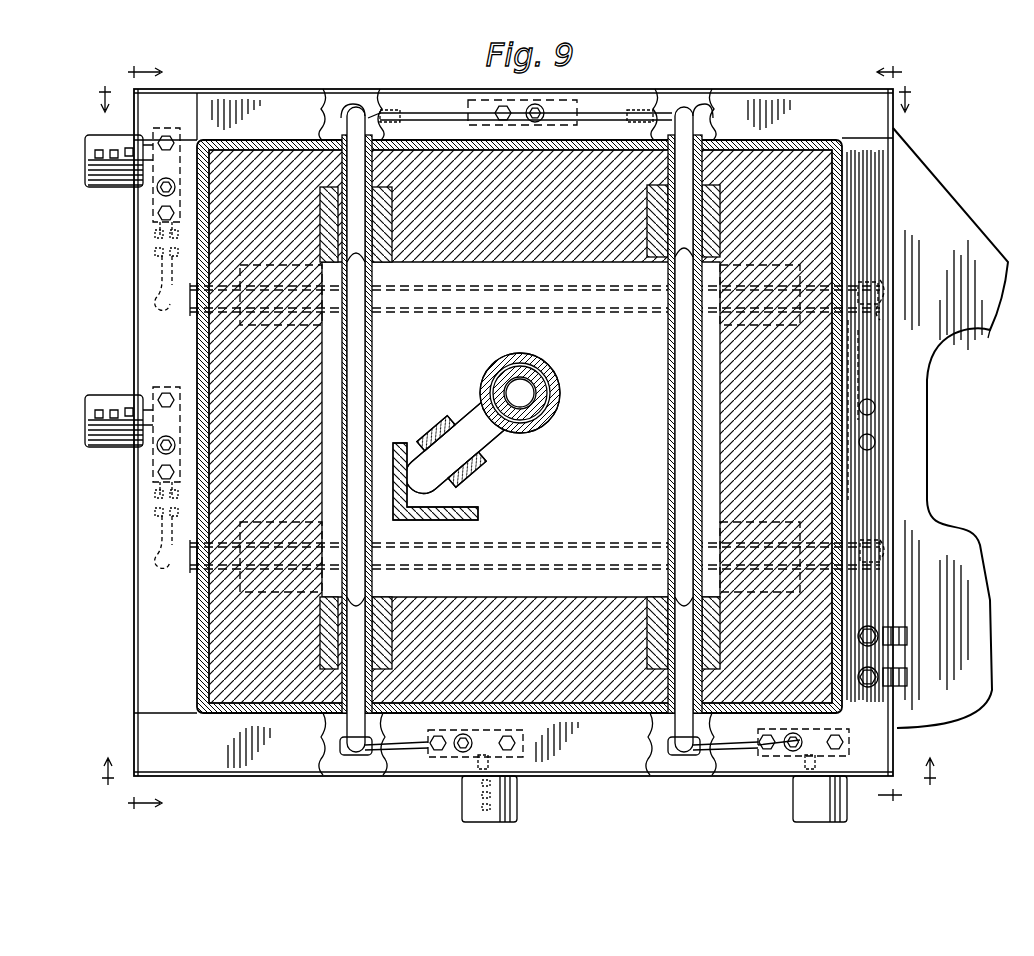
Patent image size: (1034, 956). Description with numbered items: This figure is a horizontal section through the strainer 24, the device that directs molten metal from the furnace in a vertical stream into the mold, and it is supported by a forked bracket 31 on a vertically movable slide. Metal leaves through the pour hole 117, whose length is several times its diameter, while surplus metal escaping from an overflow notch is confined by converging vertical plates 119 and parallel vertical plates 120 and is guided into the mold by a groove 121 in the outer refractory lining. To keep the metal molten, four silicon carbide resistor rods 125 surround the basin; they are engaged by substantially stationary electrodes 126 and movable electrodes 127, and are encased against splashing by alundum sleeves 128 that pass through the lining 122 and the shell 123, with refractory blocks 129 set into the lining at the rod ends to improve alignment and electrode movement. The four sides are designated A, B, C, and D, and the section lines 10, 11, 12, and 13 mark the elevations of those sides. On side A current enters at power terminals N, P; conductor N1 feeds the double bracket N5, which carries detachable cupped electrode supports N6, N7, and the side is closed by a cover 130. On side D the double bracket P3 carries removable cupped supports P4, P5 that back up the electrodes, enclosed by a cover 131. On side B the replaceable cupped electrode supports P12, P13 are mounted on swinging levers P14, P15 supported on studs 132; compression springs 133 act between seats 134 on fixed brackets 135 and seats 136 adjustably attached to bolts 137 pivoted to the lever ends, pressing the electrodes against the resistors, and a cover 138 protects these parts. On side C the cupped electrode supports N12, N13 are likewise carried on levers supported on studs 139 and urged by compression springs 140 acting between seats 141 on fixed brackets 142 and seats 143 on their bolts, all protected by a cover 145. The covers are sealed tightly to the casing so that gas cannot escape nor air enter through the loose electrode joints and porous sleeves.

The side A elevation view line 10 is at (876, 433).
The side B elevation view line 11 is at (158, 437).
The side C elevation view line 12 is at (519, 761).
The side D elevation view line 13 is at (511, 107).
The strainer 24 is at (326, 90).
The forked bracket 31 is at (982, 336).
The pour hole 117 is at (536, 393).
The converging vertical plates 119 is at (478, 516).
The parallel vertical plates 120 is at (480, 480).
The groove 121 is at (474, 428).
The lining 122 is at (716, 348).
The shell 123 is at (838, 203).
The resistor rods 125 is at (360, 398).
The stationary electrodes 126 is at (348, 118).
The movable electrodes 127 is at (166, 310).
The refractory sleeves 128 is at (372, 334).
The refractory blocks 129 is at (535, 424).
The cover 130 is at (900, 236).
The cover 131 is at (372, 100).
The studs 132 is at (160, 190).
The compression springs 133 is at (150, 140).
The seats 134 is at (150, 162).
The fixed brackets 135 is at (165, 387).
The seats 136 is at (85, 162).
The bolts 137 is at (86, 436).
The cover 138 is at (136, 347).
The studs 139 is at (631, 736).
The compression springs 140 is at (462, 791).
The seats 141 is at (510, 763).
The fixed brackets 142 is at (478, 762).
The seats 143 is at (480, 805).
The cover 145 is at (700, 768).
The side A is at (897, 214).
The side B is at (142, 260).
The side C is at (614, 770).
The side D is at (668, 100).
The power terminal N is at (907, 678).
The conductor N1 is at (330, 750).
The double bracket N5 is at (878, 412).
The cupped electrode support N6 is at (882, 550).
The cupped electrode support N7 is at (870, 280).
The cupped electrode support N12 is at (679, 759).
The cupped electrode support N13 is at (355, 759).
The power terminal P is at (907, 638).
The double bracket P3 is at (578, 110).
The cupped support P4 is at (690, 104).
The cupped support P5 is at (355, 104).
The cupped electrode support P12 is at (158, 298).
The cupped electrode support P13 is at (158, 556).
The swinging lever P14 is at (155, 222).
The swinging lever P15 is at (155, 482).